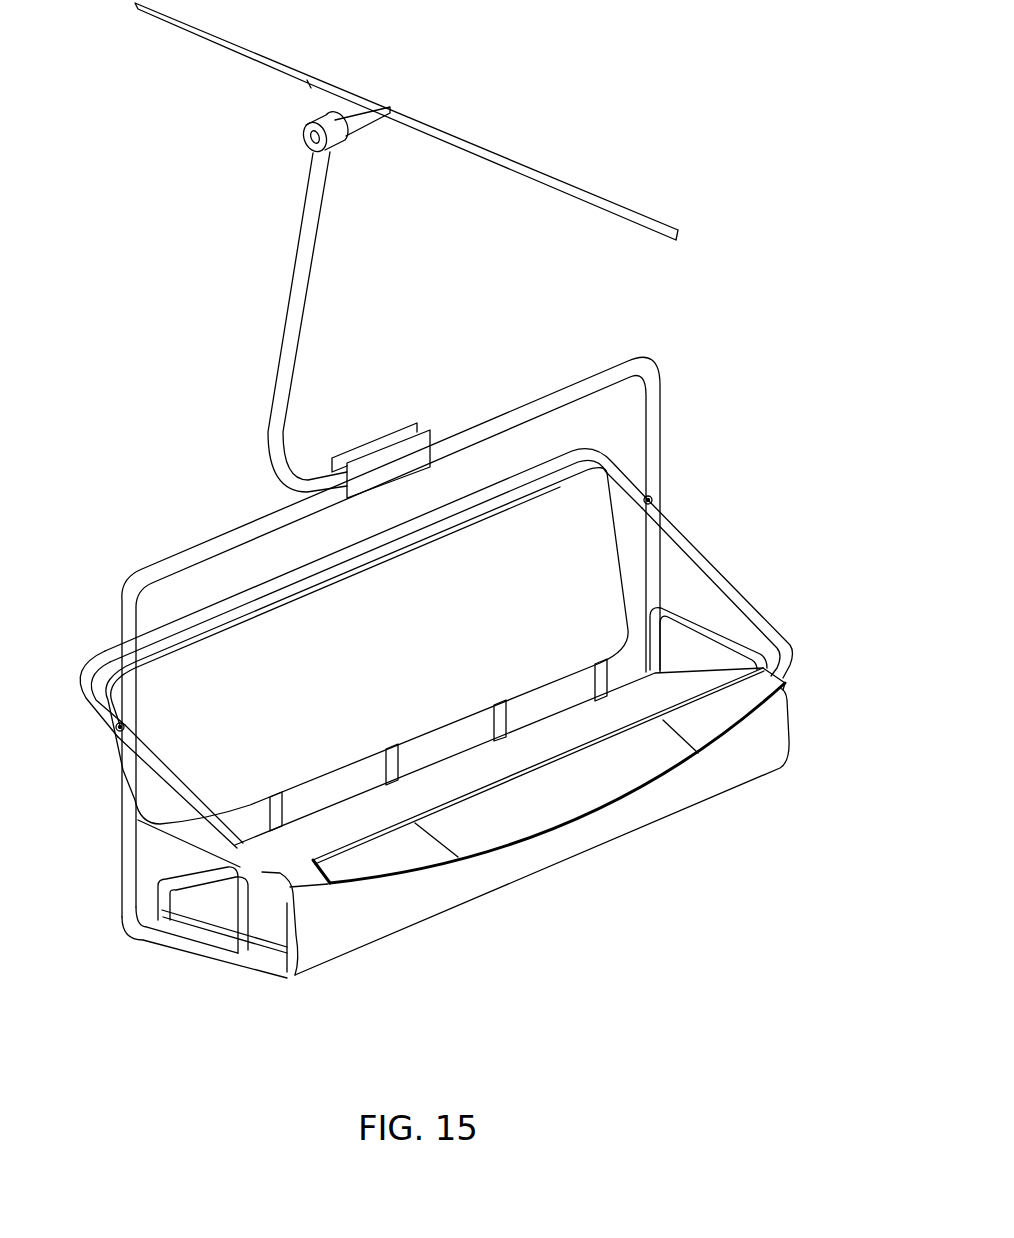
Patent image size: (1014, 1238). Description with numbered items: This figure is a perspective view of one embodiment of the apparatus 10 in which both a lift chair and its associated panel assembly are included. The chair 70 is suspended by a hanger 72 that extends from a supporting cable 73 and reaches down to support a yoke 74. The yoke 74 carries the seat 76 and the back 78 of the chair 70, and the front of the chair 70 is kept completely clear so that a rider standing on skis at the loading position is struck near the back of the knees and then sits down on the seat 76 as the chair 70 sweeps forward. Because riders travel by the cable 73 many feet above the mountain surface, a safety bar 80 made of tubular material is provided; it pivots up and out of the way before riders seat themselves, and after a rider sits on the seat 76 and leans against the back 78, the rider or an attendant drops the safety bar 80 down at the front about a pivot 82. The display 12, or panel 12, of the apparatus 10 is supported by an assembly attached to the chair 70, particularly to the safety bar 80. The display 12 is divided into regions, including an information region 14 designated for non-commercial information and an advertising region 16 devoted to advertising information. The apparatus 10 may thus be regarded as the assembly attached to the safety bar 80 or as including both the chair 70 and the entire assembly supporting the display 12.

The apparatus 10 is at (788, 700).
The display 12 is at (537, 842).
The information region 14 is at (575, 785).
The advertising region 16 is at (718, 708).
The chair 70 is at (143, 278).
The hanger 72 is at (300, 300).
The supporting cable 73 is at (618, 206).
The yoke 74 is at (630, 362).
The seat 76 is at (330, 947).
The back 78 is at (313, 620).
The safety bar 80 is at (728, 578).
The pivot 82 is at (655, 498).